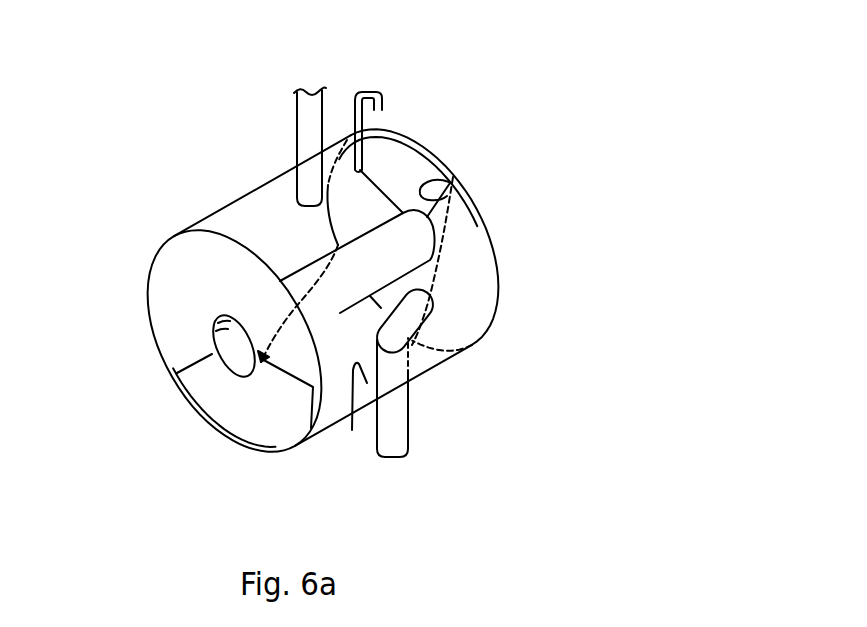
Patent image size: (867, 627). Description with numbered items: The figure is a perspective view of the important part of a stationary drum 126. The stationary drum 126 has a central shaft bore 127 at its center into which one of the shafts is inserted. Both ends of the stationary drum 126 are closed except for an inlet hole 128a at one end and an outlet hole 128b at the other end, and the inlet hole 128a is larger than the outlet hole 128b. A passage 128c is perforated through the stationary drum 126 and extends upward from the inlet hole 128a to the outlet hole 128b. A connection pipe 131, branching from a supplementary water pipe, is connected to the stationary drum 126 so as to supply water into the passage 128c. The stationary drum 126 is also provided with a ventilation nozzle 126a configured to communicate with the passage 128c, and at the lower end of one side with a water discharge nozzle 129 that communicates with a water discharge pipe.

The stationary drum 126 is at (200, 217).
The ventilation nozzle 126a is at (378, 92).
The central shaft bore 127 is at (226, 322).
The inlet hole 128a is at (213, 393).
The outlet hole 128b is at (450, 183).
The passage 128c is at (352, 430).
The water discharge nozzle 129 is at (395, 433).
The connection pipe 131 is at (307, 150).